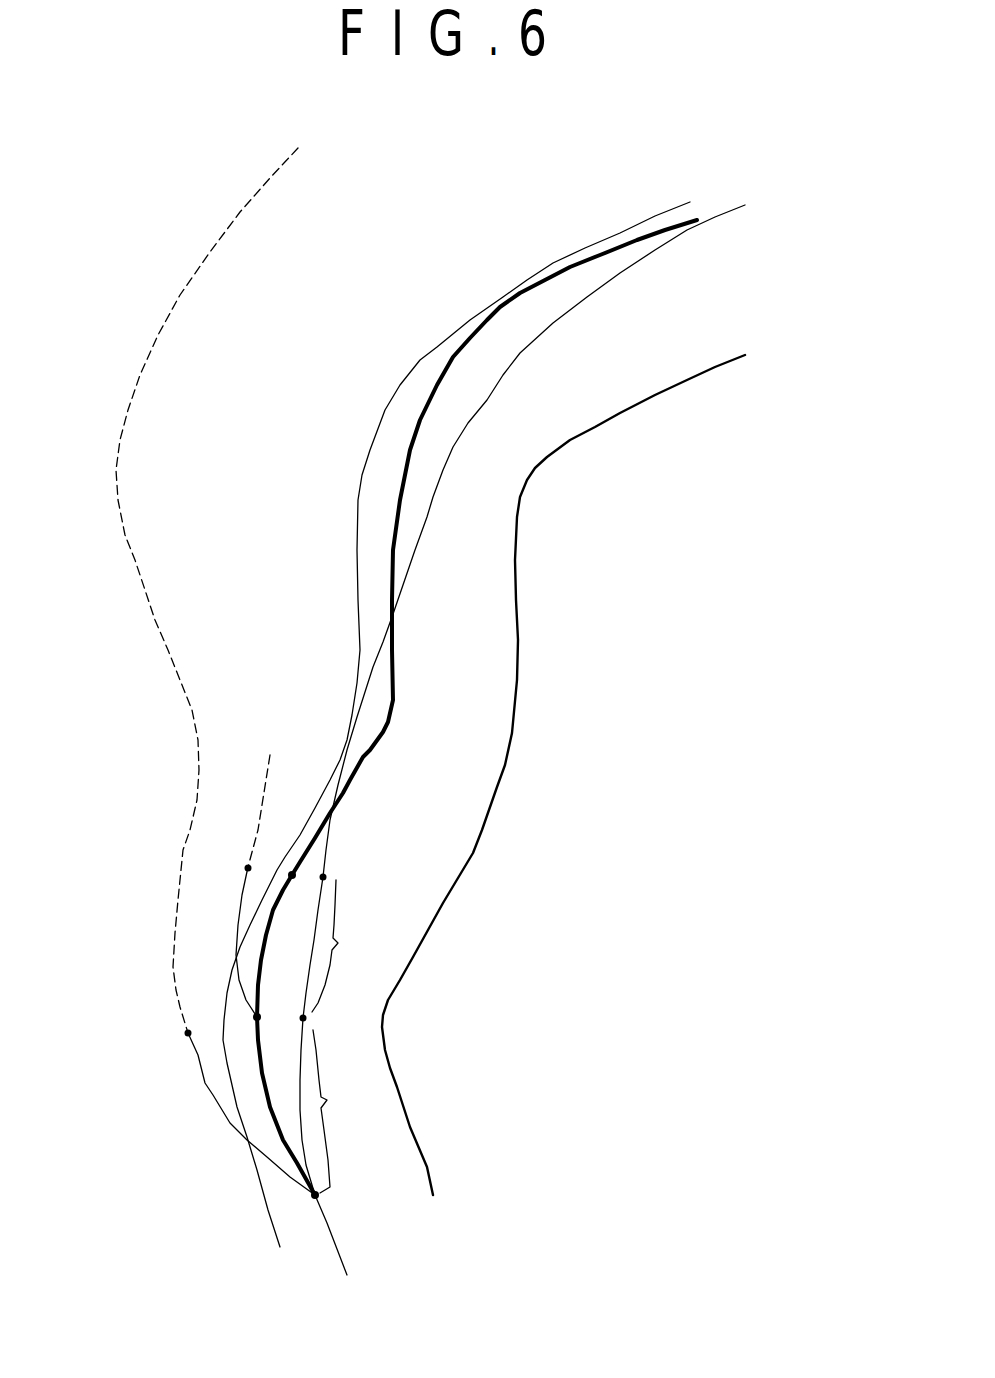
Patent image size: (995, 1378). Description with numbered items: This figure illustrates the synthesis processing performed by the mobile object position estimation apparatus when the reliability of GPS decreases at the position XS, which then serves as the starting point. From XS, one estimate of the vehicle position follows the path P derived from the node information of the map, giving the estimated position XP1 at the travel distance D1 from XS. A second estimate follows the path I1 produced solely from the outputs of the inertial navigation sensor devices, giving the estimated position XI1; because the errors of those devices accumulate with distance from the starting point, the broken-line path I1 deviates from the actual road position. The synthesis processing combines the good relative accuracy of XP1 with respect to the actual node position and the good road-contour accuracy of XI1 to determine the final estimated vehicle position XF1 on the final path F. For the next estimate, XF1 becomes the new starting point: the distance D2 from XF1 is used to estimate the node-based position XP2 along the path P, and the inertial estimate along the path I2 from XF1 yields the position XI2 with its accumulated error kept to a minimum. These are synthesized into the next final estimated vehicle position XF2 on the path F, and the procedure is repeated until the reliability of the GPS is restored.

The node-information-based estimated position line P is at (468, 423).
The final estimated vehicle position line F is at (395, 668).
The inertial-navigation-based estimated position line from the starting point I1 is at (213, 1093).
The inertial-navigation-based estimated position line from the previous final positi I2 is at (242, 983).
The inertial-navigation-based estimated vehicle position XI1 is at (188, 1033).
The second inertial-navigation-based estimated vehicle position XI2 is at (248, 868).
The node-information-based estimated vehicle position XP1 is at (305, 1019).
The second node-information-based estimated vehicle position XP2 is at (323, 877).
The final estimated vehicle position XF1 is at (258, 1017).
The next final estimated vehicle position XF2 is at (293, 878).
The starting point position XS is at (318, 1195).
The first travel distance D1 is at (337, 1111).
The second travel distance D2 is at (341, 946).